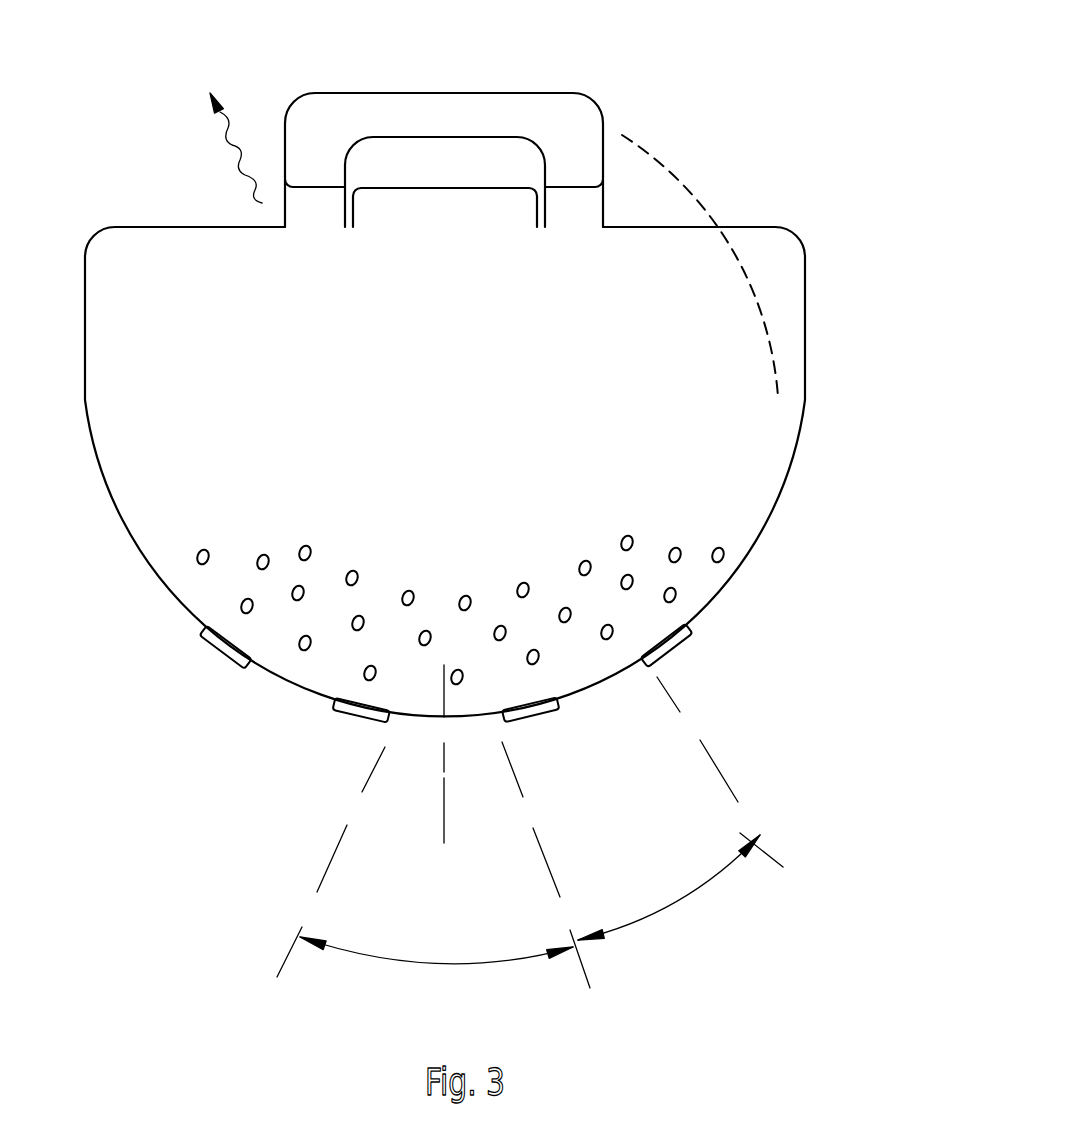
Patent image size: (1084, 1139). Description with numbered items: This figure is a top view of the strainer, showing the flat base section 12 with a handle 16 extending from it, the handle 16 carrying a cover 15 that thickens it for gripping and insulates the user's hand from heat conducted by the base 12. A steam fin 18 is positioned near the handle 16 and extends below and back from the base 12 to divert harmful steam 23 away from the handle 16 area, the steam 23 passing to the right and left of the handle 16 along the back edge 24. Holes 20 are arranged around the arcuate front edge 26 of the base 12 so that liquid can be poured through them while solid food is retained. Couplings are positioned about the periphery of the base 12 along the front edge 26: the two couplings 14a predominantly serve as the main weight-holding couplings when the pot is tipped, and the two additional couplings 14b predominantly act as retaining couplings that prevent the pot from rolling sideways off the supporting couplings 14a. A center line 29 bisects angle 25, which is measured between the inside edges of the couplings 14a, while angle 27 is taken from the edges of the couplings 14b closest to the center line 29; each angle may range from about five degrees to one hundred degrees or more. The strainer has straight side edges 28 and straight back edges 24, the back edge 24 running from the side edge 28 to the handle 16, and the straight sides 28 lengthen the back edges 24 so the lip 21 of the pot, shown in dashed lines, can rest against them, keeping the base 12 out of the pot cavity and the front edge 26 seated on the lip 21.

The base section 12 is at (527, 408).
The couplings 14a is at (353, 740).
The couplings 14b is at (200, 668).
The cover 15 is at (333, 93).
The handle 16 is at (628, 62).
The steam fin 18 is at (448, 213).
The holes 20 is at (407, 595).
The lip 21 is at (667, 168).
The steam 23 is at (223, 126).
The back edge 24 is at (163, 227).
The angle 25 is at (433, 865).
The front edge 26 is at (747, 562).
The angle 27 is at (680, 808).
The side edge 28 is at (805, 340).
The center line 29 is at (443, 757).